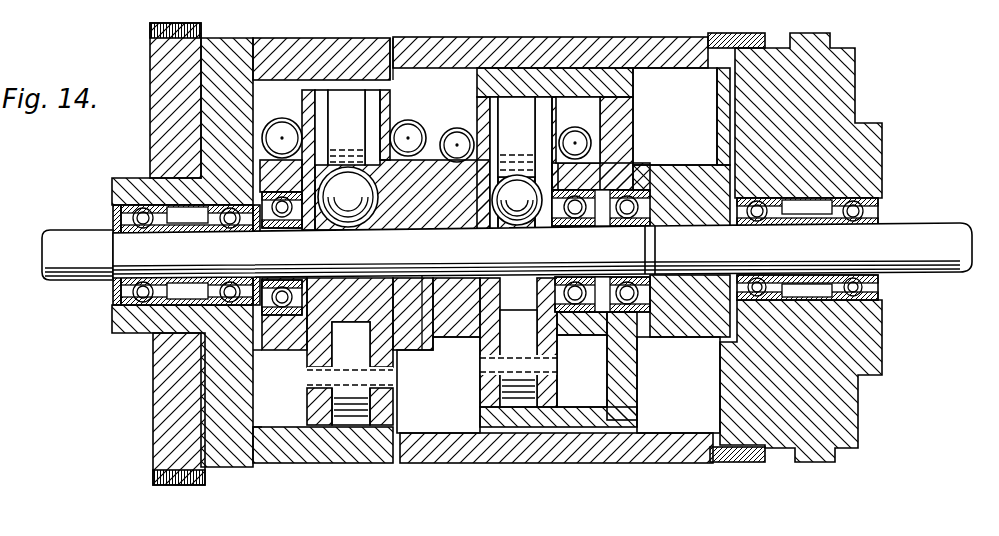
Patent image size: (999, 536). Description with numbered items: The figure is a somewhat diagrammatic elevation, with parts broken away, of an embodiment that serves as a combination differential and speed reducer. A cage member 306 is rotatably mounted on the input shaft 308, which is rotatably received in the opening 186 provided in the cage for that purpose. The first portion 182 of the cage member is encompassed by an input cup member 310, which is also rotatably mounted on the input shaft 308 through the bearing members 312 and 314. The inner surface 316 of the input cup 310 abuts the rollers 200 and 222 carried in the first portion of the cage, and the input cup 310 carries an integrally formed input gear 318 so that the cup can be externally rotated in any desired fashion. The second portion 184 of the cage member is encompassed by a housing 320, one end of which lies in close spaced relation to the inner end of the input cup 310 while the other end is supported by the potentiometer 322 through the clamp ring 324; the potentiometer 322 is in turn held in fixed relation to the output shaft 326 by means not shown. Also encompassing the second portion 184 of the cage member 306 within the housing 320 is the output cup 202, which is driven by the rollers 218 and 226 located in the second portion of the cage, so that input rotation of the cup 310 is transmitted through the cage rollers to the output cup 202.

The first portion of the cage member 182 is at (397, 100).
The second portion of the cage member 184 is at (560, 110).
The opening 186 is at (422, 325).
The roller 200 is at (352, 427).
The output cup 202 is at (552, 77).
The roller 218 is at (518, 408).
The roller 222 is at (337, 122).
The roller 226 is at (513, 118).
The cage member 306 is at (413, 185).
The input shaft 308 is at (62, 275).
The input cup member 310 is at (248, 31).
The bearing member 312 is at (128, 308).
The bearing member 314 is at (165, 350).
The inner surface of the input cup 316 is at (257, 428).
The input gear 318 is at (152, 27).
The housing 320 is at (668, 45).
The potentiometer 322 is at (815, 33).
The clamp ring 324 is at (742, 33).
The output shaft 326 is at (943, 225).